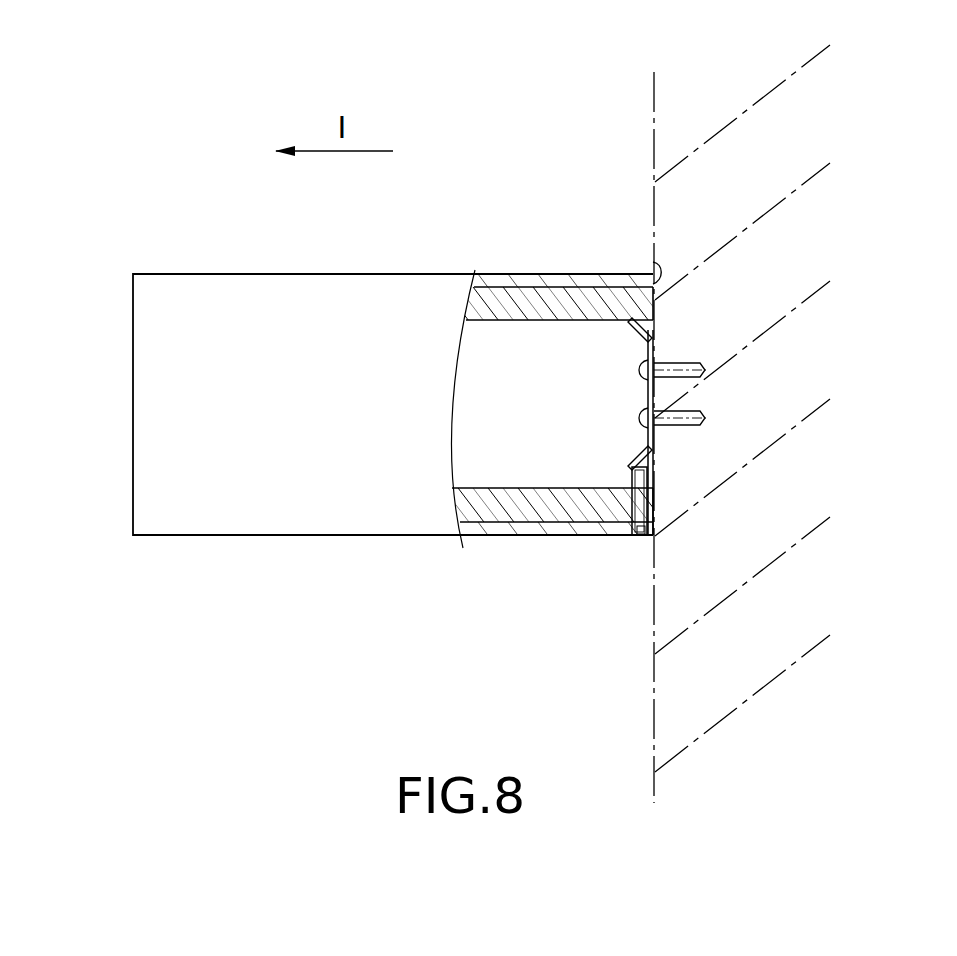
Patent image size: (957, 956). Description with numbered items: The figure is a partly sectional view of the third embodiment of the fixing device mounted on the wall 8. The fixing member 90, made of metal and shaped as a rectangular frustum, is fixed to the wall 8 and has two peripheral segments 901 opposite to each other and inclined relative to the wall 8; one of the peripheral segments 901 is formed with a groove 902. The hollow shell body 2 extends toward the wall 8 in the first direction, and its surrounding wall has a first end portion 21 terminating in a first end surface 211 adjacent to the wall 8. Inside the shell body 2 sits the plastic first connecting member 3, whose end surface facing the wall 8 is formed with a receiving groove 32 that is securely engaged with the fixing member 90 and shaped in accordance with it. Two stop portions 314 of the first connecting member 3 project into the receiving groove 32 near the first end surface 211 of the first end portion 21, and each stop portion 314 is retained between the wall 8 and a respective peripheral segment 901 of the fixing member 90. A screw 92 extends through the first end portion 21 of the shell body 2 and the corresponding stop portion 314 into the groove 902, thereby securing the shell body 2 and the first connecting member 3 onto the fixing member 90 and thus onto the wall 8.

The shell body 2 is at (228, 272).
The first end portion 21 is at (547, 537).
The first end surface 211 is at (659, 272).
The first connecting member 3 is at (524, 285).
The receiving groove 32 is at (560, 372).
The stop portion 314 is at (656, 308).
The fixing member 90 is at (657, 349).
The peripheral segment 901 is at (641, 331).
The groove 902 is at (656, 458).
The screw 92 is at (636, 540).
The wall 8 is at (652, 702).